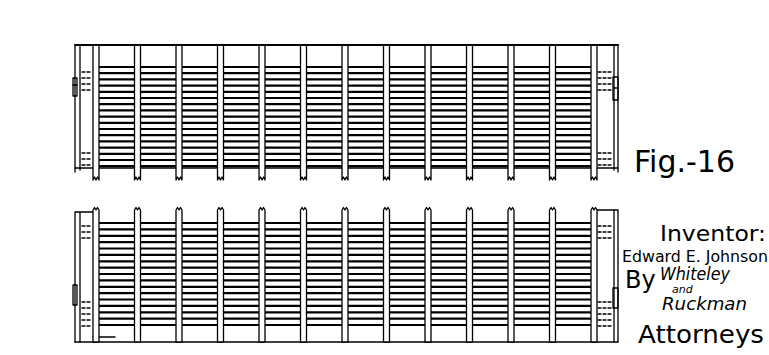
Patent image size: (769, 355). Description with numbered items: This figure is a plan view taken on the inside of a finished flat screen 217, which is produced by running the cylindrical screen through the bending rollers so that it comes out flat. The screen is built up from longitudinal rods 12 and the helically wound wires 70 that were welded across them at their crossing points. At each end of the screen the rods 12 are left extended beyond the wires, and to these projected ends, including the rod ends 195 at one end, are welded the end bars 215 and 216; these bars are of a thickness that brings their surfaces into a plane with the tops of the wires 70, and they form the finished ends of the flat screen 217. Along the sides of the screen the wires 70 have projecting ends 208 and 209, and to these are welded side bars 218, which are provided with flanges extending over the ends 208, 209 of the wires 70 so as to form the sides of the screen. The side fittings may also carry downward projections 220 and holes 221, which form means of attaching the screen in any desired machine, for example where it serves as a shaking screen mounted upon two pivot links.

The rods 12 is at (222, 212).
The wires 70 is at (100, 117).
The projected ends of the rods 195 is at (508, 50).
The projecting ends of the wires 208 is at (604, 63).
The projecting ends of the wires 209 is at (83, 60).
The bar 215 is at (444, 49).
The bar 216 is at (80, 337).
The flat screen 217 is at (289, 31).
The side bars 218 is at (85, 135).
The downward projections 220 is at (73, 75).
The holes 221 is at (72, 86).